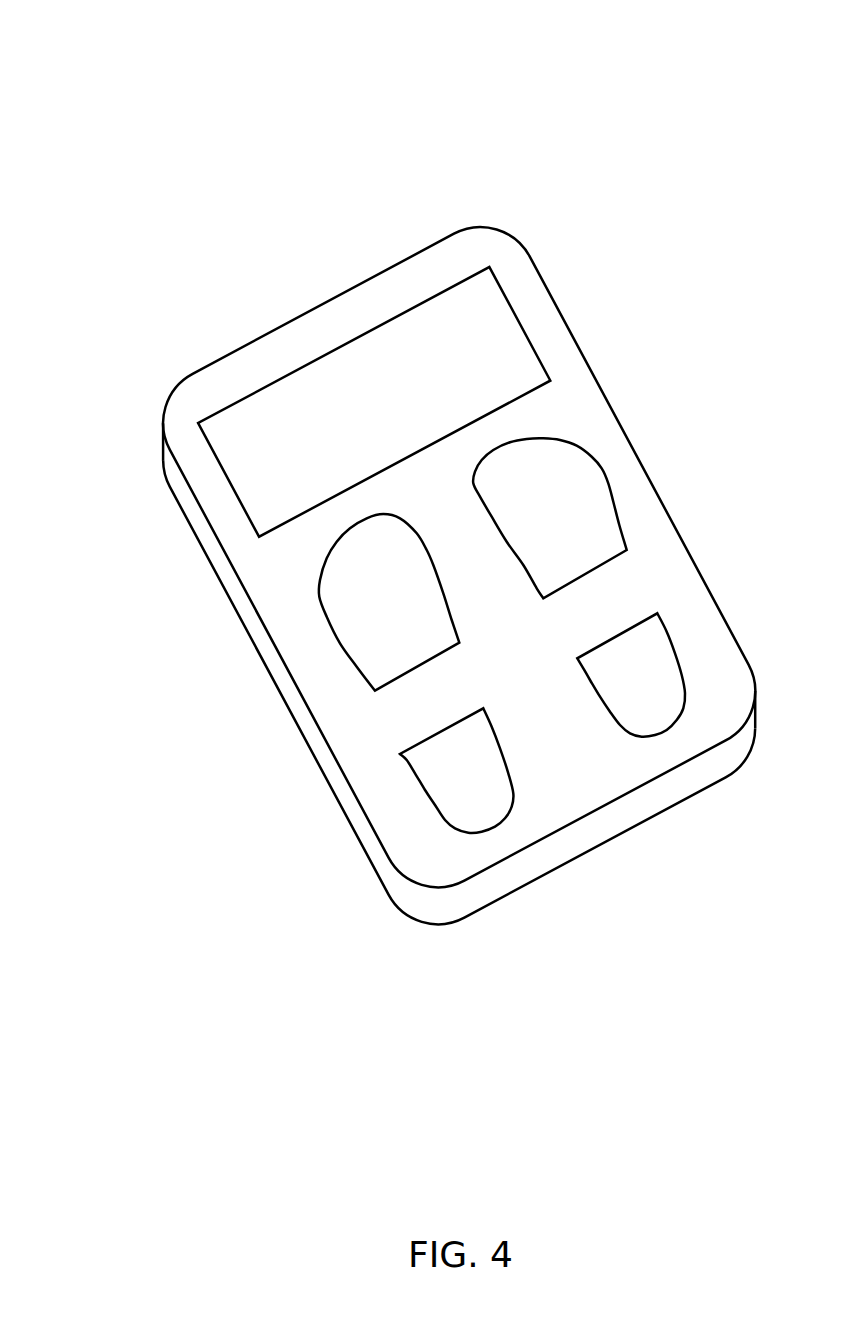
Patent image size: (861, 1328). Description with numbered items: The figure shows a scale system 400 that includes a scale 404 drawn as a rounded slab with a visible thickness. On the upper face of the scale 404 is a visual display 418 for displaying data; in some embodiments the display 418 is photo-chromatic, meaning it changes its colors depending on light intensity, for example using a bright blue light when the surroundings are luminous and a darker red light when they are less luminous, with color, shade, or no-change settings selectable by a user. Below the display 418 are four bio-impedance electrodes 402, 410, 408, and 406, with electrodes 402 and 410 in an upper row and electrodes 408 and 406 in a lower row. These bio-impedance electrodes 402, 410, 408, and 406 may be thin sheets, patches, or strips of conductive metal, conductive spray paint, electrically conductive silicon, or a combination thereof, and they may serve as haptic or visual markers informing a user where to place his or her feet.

The system 400 is at (173, 89).
The bio-impedance electrode 402 is at (389, 602).
The scale 404 is at (459, 557).
The bio-impedance electrode 406 is at (631, 674).
The bio-impedance electrode 408 is at (457, 770).
The bio-impedance electrode 410 is at (550, 518).
The visual display 418 is at (374, 402).